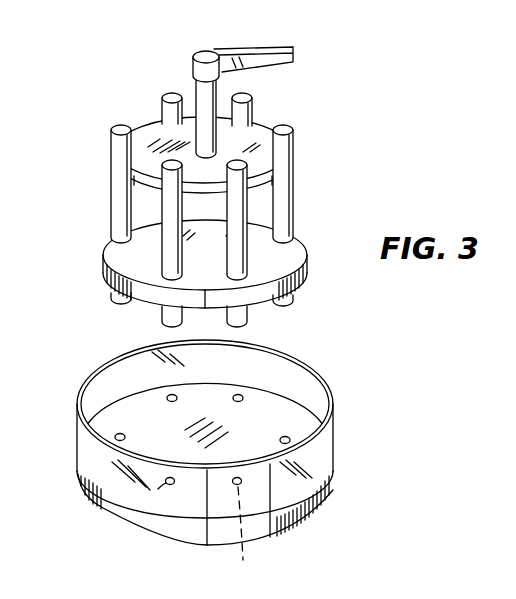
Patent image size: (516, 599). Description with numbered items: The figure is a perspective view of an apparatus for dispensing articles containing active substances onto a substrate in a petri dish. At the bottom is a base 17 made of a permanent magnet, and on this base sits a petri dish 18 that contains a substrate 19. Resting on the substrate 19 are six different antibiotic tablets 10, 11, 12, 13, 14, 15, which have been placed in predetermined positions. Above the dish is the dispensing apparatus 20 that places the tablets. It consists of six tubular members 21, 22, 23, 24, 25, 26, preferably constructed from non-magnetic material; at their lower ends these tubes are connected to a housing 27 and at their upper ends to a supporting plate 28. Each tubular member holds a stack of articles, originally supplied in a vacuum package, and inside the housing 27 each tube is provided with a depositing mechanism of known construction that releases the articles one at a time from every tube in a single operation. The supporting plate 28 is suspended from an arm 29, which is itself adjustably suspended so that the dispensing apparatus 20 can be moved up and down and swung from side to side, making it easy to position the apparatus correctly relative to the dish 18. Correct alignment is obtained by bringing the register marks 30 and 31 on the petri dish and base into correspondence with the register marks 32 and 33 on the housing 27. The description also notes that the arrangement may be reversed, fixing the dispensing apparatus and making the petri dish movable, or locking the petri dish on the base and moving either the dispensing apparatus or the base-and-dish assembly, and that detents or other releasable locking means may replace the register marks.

The antibiotic tablet 10 is at (170, 396).
The antibiotic tablet 11 is at (244, 398).
The antibiotic tablet 12 is at (291, 440).
The antibiotic tablet 13 is at (251, 533).
The antibiotic tablet 14 is at (120, 508).
The antibiotic tablet 15 is at (115, 438).
The base 17 is at (300, 512).
The petri dish 18 is at (314, 469).
The substrate 19 is at (297, 415).
The dispensing apparatus 20 is at (305, 179).
The tubular member 21 is at (118, 141).
The tubular member 22 is at (166, 101).
The tubular member 23 is at (247, 104).
The tubular member 24 is at (290, 133).
The tubular member 25 is at (240, 232).
The tubular member 26 is at (170, 257).
The housing 27 is at (182, 282).
The supporting plate 28 is at (156, 134).
The arm 29 is at (270, 49).
The register mark 30 is at (208, 508).
The register mark 31 is at (277, 499).
The register mark 32 is at (207, 292).
The register mark 33 is at (266, 289).